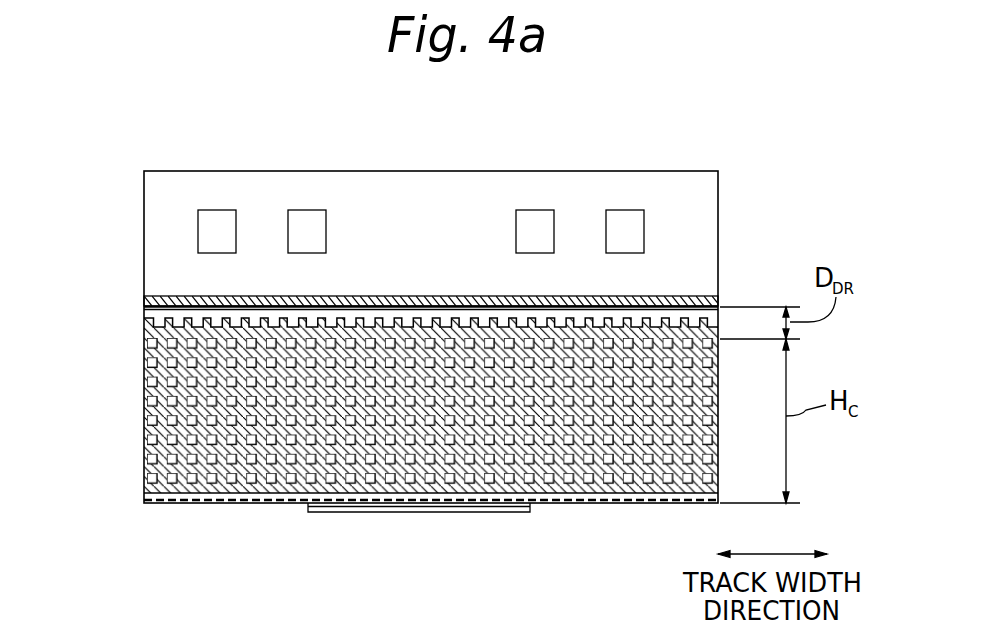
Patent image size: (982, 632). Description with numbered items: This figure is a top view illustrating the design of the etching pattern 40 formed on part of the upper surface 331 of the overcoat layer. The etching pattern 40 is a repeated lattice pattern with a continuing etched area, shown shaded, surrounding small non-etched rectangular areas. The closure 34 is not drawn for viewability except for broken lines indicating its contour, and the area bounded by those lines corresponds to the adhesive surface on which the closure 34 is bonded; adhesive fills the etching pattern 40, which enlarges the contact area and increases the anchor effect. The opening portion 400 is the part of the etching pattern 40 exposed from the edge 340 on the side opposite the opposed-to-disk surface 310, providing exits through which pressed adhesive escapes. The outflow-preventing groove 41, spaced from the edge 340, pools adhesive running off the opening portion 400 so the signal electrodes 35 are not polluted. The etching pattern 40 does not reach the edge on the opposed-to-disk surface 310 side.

The upper surface of the overcoat layer 331 is at (670, 189).
The signal electrodes 35 is at (307, 222).
The outflow-preventing groove 41 is at (262, 300).
The closure 34 is at (637, 339).
The etching pattern 40 is at (312, 409).
The opening portion 400 is at (252, 327).
The edge 340 is at (412, 322).
The opposed-to-disk surface 310 is at (618, 507).